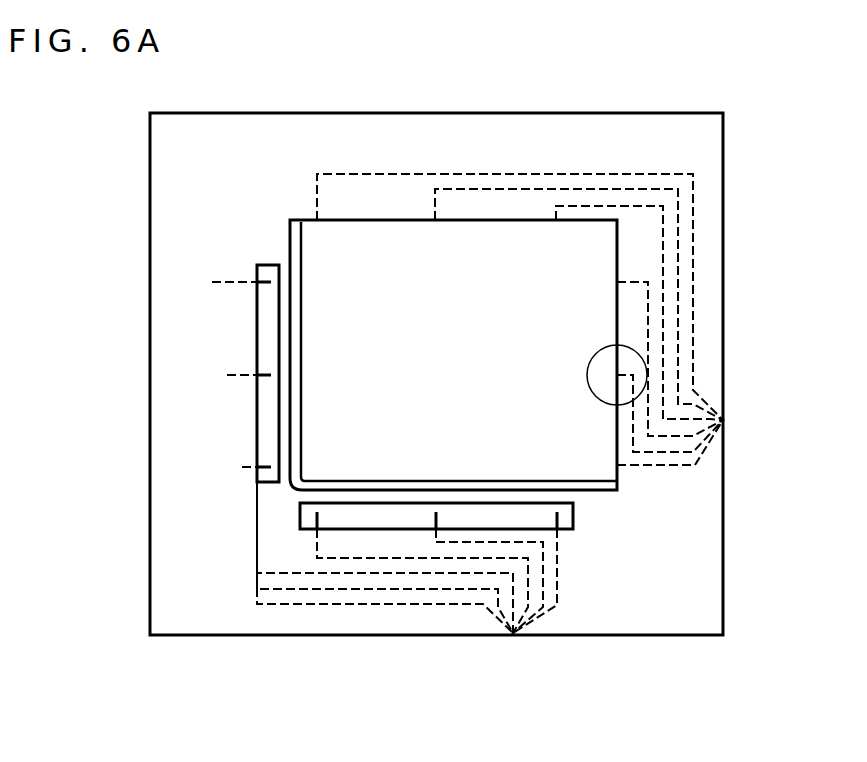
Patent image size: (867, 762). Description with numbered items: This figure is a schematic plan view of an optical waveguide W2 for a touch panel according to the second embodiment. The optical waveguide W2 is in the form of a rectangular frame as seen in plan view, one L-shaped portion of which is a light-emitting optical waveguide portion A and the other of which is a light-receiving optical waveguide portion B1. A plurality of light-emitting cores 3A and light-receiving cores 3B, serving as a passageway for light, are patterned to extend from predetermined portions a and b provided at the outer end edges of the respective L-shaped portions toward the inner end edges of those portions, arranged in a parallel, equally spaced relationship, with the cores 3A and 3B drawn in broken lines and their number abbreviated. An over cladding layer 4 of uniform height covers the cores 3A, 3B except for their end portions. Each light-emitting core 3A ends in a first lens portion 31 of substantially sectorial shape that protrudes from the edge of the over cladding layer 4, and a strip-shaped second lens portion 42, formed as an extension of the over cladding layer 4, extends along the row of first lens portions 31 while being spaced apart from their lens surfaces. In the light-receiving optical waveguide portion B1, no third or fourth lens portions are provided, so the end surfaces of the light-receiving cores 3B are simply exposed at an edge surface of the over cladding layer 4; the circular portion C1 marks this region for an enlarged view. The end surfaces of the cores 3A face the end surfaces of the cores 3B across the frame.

The over cladding layer 4 is at (703, 570).
The second lens portion 42 is at (297, 293).
The first lens portion 31 is at (265, 377).
The light-emitting cores 3A is at (367, 590).
The light-receiving cores 3B is at (647, 298).
The circular portion C1 is at (648, 363).
The predetermined portion a is at (513, 633).
The predetermined portion b is at (723, 420).
The optical waveguide for the touch panel W2 is at (134, 243).
The light-receiving optical waveguide portion B1 is at (725, 228).
The light-emitting optical waveguide portion A is at (148, 503).